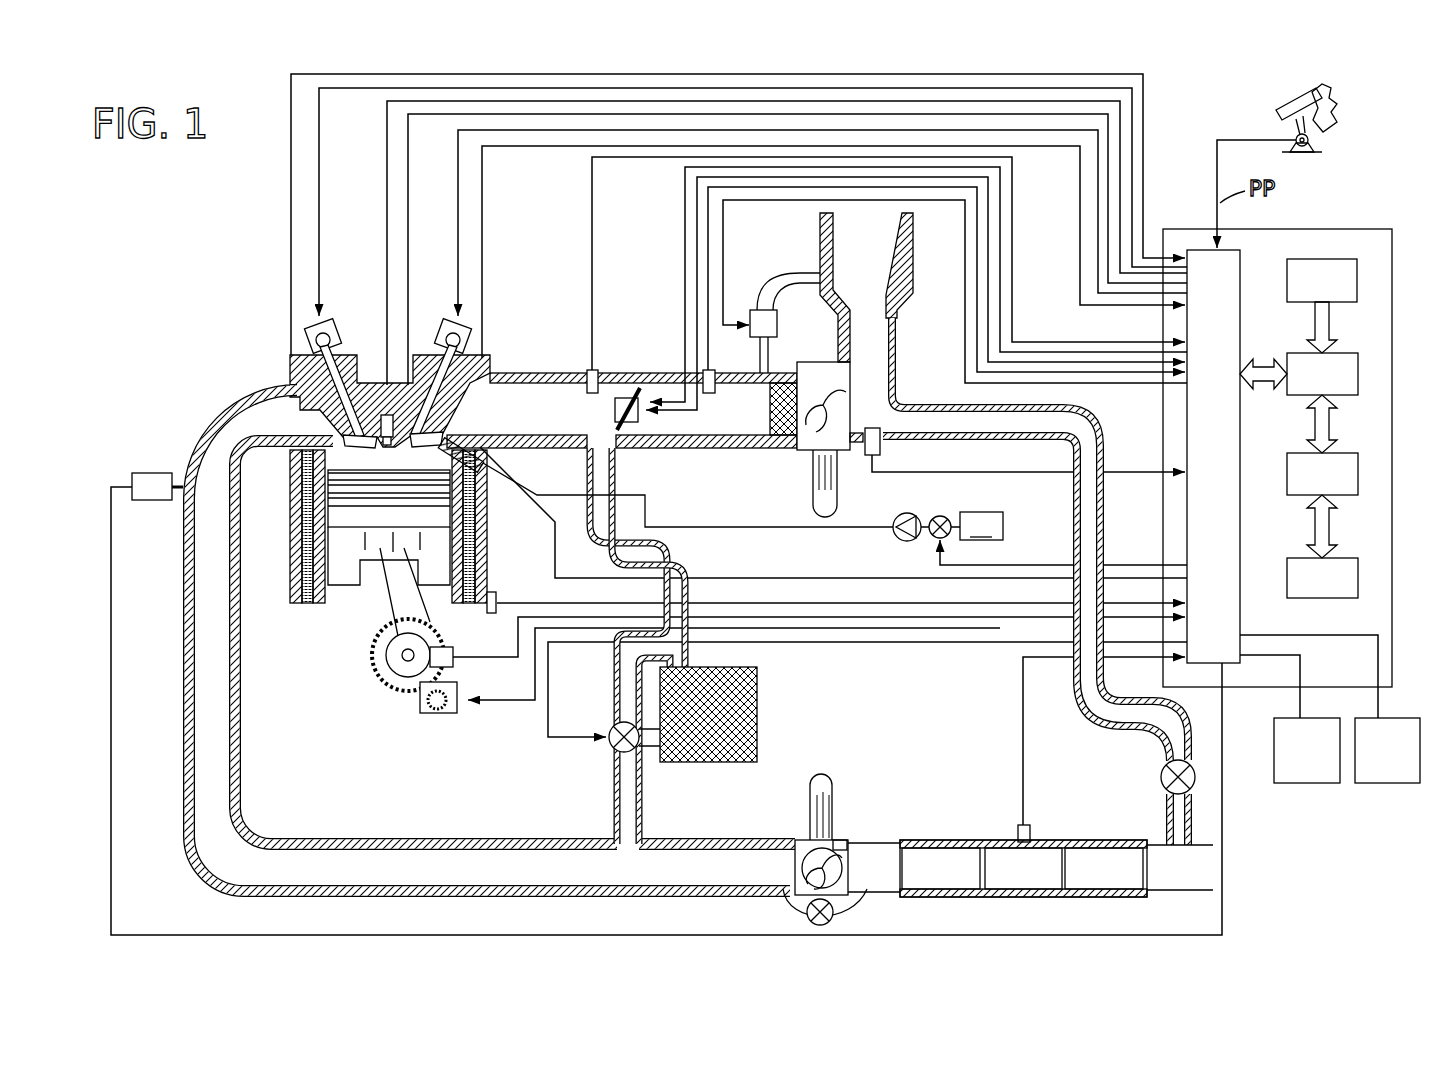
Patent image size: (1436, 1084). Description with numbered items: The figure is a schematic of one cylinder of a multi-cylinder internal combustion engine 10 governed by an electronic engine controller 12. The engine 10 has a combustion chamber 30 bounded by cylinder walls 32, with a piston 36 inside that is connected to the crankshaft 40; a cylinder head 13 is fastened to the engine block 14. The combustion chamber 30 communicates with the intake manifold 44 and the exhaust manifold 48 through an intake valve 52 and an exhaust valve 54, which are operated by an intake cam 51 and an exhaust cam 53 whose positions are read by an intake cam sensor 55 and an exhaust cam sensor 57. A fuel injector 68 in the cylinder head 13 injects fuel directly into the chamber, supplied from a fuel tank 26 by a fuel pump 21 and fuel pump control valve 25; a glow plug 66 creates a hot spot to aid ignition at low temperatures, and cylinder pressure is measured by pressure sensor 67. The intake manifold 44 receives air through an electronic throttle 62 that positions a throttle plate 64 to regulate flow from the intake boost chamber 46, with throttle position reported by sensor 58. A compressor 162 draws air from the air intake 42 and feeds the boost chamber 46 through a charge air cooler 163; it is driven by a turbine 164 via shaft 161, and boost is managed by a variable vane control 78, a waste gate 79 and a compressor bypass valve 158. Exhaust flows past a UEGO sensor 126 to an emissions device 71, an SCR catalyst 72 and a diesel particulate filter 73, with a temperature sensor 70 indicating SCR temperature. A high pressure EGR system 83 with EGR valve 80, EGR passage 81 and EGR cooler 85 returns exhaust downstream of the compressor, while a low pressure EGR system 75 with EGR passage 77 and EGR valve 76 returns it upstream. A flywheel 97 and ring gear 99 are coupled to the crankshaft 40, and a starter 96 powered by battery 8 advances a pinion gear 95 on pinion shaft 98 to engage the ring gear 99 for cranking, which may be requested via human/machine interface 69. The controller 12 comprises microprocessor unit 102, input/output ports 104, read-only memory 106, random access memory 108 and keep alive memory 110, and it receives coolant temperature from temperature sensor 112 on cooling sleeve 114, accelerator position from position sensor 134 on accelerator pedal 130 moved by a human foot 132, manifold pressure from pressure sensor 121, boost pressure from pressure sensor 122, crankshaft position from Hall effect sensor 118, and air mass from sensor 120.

The battery 8 is at (1387, 750).
The internal combustion engine 10 is at (226, 306).
The electronic engine controller 12 is at (1370, 229).
The cylinder head 13 is at (413, 417).
The engine block 14 is at (318, 460).
The fuel pump 21 is at (905, 516).
The fuel pump control valve 25 is at (935, 535).
The fuel tank 26 is at (981, 526).
The combustion chamber 30 is at (300, 568).
The cylinder walls 32 is at (322, 598).
The piston 36 is at (380, 548).
The crankshaft 40 is at (400, 680).
The air intake 42 is at (854, 288).
The intake manifold 44 is at (524, 428).
The intake boost chamber 46 is at (709, 428).
The exhaust manifold 48 is at (244, 429).
The intake cam 51 is at (456, 320).
The intake valve 52 is at (433, 417).
The exhaust cam 53 is at (325, 321).
The exhaust valve 54 is at (337, 407).
The intake cam sensor 55 is at (468, 346).
The exhaust cam sensor 57 is at (308, 343).
The throttle position sensor 58 is at (647, 418).
The electronic throttle 62 is at (617, 387).
The throttle plate 64 is at (634, 392).
The glow plug 66 is at (377, 405).
The pressure sensor 67 is at (411, 415).
The fuel injector 68 is at (483, 468).
The human/machine interface 69 is at (1307, 750).
The temperature sensor 70 is at (1026, 825).
The emissions device 71 is at (1023, 868).
The selective catalytic reduction catalyst 72 is at (1023, 868).
The diesel particulate filter 73 is at (1104, 868).
The low pressure EGR system 75 is at (1100, 744).
The EGR valve 76 is at (1163, 775).
The EGR passage 77 is at (1082, 705).
The variable vane control 78 is at (846, 840).
The waste gate 79 is at (835, 914).
The EGR valve 80 is at (612, 726).
The EGR passage 81 is at (603, 483).
The high pressure EGR system 83 is at (570, 758).
The EGR cooler 85 is at (757, 702).
The pinion gear 95 is at (447, 712).
The starter 96 is at (458, 706).
The flywheel 97 is at (385, 650).
The pinion shaft 98 is at (432, 705).
The ring gear 99 is at (405, 700).
The microprocessor unit 102 is at (1358, 372).
The input/output ports 104 is at (1241, 260).
The read-only memory 106 is at (1357, 280).
The random access memory 108 is at (1358, 472).
The keep alive memory 110 is at (1358, 575).
The temperature sensor 112 is at (497, 592).
The cooling sleeve 114 is at (305, 522).
The Hall effect sensor 118 is at (456, 655).
The air mass sensor 120 is at (880, 445).
The pressure sensor 121 is at (587, 372).
The pressure sensor 122 is at (712, 370).
The universal exhaust gas oxygen sensor 126 is at (132, 478).
The accelerator pedal 130 is at (1280, 110).
The human foot 132 is at (1338, 106).
The position sensor 134 is at (1310, 147).
The compressor bypass valve 158 is at (755, 310).
The shaft 161 is at (838, 490).
The compressor 162 is at (803, 450).
The charge air cooler 163 is at (783, 425).
The turbine 164 is at (800, 838).